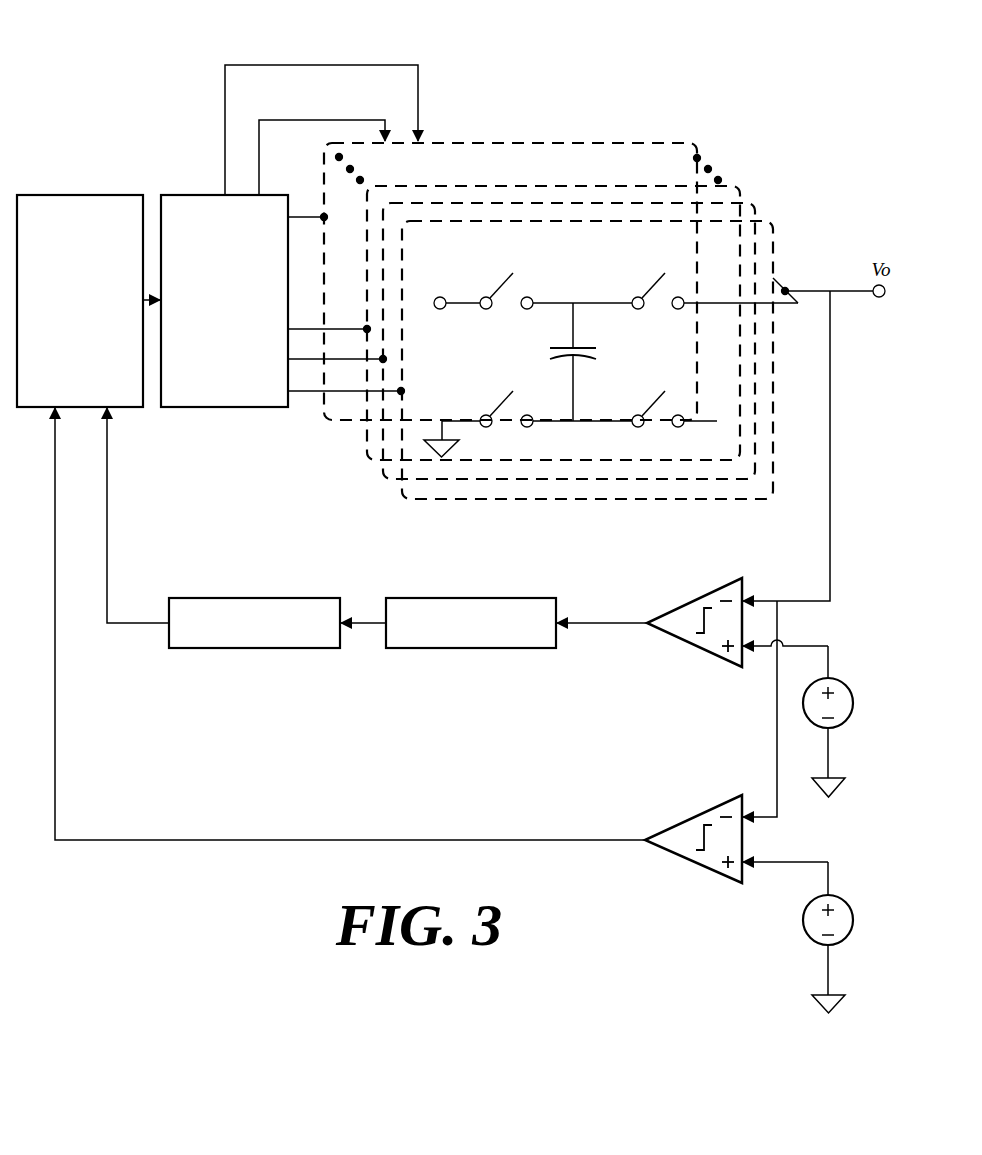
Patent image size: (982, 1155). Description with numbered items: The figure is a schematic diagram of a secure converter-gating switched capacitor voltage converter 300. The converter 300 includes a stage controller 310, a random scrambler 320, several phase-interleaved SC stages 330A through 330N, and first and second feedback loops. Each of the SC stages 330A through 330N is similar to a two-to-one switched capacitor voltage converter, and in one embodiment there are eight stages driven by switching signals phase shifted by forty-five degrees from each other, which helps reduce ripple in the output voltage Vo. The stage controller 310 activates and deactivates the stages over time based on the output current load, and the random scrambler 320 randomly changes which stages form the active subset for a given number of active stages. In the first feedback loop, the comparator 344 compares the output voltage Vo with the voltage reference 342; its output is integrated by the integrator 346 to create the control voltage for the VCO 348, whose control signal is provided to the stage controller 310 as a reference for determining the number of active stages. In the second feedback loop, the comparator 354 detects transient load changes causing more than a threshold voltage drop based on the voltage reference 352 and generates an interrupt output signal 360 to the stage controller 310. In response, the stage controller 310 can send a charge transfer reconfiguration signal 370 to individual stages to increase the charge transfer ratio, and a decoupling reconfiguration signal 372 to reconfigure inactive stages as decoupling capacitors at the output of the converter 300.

The secure converter-gating switched capacitor voltage converter 300 is at (66, 123).
The stage controller 310 is at (88, 301).
The random scrambler 320 is at (283, 301).
The phase-interleaved SC stage 330A is at (758, 221).
The phase-interleaved SC stage 330N is at (680, 143).
The voltage reference 342 is at (840, 681).
The comparator 344 is at (672, 608).
The integrator 346 is at (432, 597).
The voltage controlled oscillator (VCO) 348 is at (202, 597).
The voltage reference 352 is at (840, 897).
The comparator 354 is at (672, 824).
The interrupt output signal 360 is at (210, 840).
The charge transfer reconfiguration signal 370 is at (300, 120).
The decoupling reconfiguration signal 372 is at (300, 65).